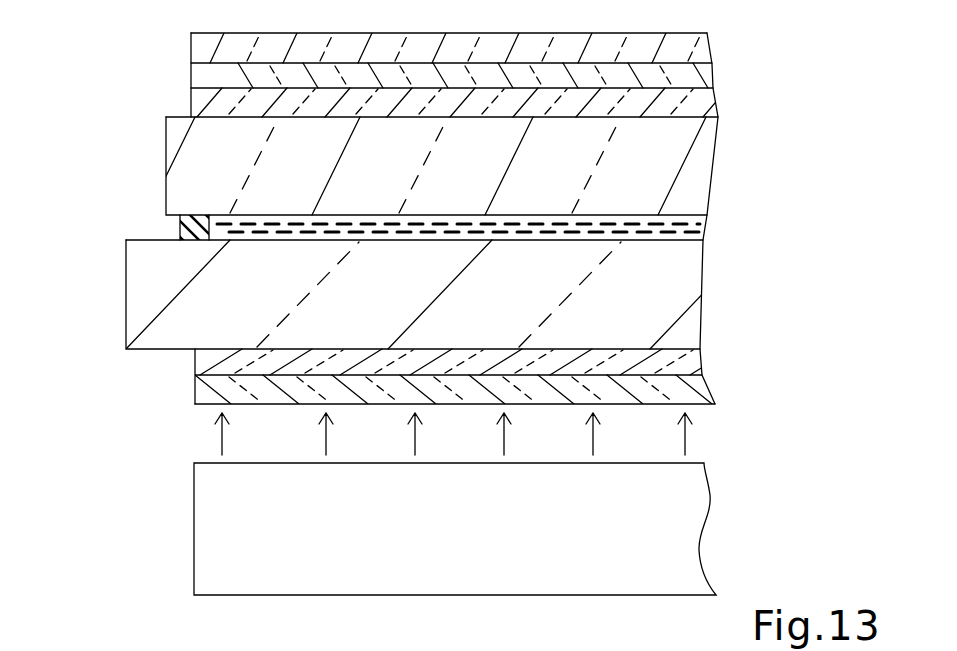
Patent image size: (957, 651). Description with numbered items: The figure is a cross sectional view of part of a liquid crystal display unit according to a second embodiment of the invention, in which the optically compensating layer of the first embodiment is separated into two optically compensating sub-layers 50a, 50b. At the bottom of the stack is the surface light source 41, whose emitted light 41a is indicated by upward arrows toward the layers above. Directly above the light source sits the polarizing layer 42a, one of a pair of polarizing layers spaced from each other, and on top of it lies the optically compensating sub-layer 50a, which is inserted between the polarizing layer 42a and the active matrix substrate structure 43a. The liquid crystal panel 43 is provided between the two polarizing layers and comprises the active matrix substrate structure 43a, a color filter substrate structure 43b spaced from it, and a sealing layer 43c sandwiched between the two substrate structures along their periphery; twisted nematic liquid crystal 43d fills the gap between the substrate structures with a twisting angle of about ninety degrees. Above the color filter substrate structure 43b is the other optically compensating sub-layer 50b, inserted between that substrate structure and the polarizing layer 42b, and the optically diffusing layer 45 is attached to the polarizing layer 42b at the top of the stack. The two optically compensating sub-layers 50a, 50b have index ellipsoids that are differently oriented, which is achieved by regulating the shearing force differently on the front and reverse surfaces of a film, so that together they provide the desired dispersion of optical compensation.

The surface light source 41 is at (210, 548).
The light emitted from surface light source 41a is at (718, 441).
The polarizing layer 42a is at (197, 398).
The polarizing layer 42b is at (210, 75).
The liquid crystal panel 43 is at (80, 180).
The active matrix substrate structure 43a is at (145, 307).
The color filter substrate structure 43b is at (190, 154).
The sealing layer 43c is at (178, 227).
The twisted nematic liquid crystal 43d is at (278, 230).
The optically diffusing layer 45 is at (200, 33).
The optically compensating sub-layer 50a is at (210, 362).
The optically compensating sub-layer 50b is at (210, 100).